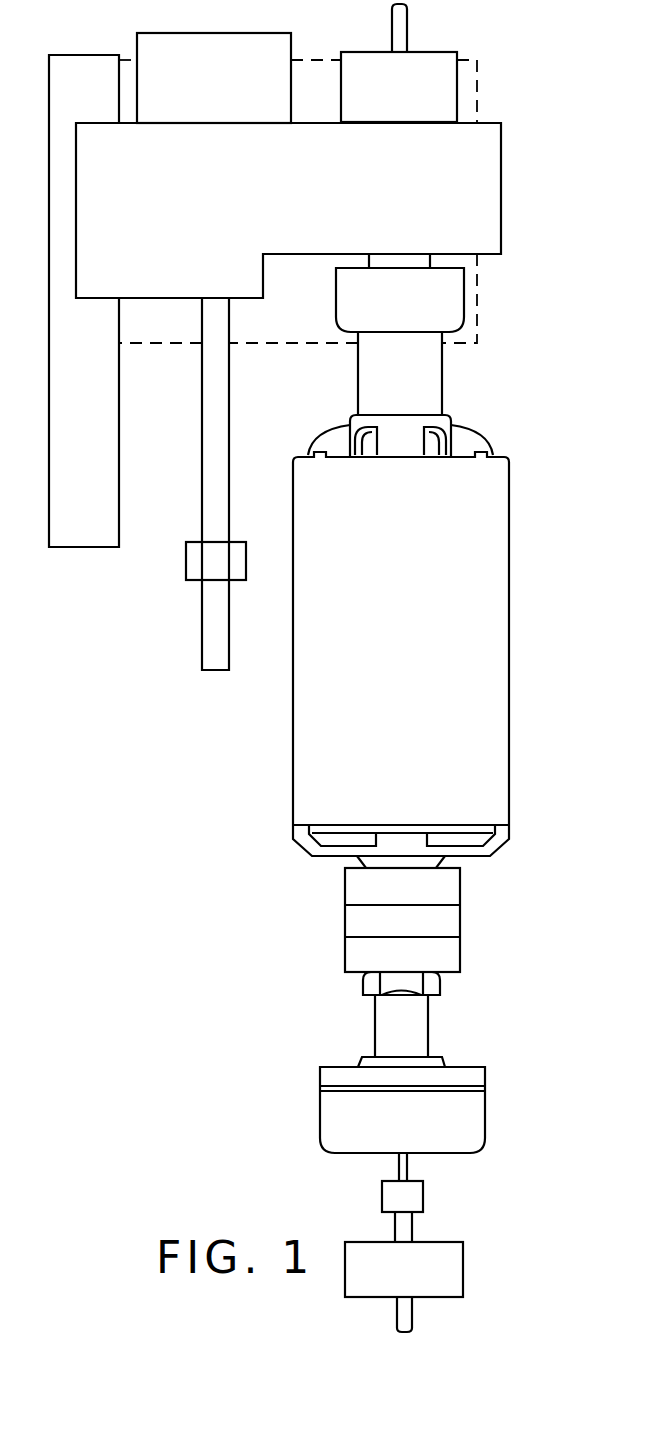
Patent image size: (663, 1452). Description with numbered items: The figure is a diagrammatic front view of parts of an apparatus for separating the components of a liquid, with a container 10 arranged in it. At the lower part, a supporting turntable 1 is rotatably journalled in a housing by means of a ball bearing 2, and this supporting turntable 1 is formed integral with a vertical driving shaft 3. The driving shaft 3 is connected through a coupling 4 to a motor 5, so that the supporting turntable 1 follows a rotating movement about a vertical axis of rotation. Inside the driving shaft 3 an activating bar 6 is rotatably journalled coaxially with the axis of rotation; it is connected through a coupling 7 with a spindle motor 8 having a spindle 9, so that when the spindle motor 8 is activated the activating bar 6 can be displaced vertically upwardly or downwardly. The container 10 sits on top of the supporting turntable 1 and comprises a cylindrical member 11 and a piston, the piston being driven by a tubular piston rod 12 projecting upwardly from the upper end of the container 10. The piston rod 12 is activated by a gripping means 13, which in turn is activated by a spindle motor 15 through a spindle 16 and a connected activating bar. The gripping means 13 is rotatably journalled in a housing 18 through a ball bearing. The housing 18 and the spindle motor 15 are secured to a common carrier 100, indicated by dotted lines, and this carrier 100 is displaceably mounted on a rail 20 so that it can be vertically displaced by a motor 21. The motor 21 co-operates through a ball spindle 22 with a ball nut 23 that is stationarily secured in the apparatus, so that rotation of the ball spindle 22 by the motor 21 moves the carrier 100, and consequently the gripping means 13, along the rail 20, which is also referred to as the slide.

The supporting turntable 1 is at (492, 852).
The ball bearing 2 is at (452, 951).
The vertical driving shaft 3 is at (427, 862).
The coupling 4 is at (423, 1025).
The motor 5 is at (474, 1108).
The activating bar 6 is at (407, 1162).
The coupling 7 is at (416, 1197).
The spindle motor 8 is at (453, 1273).
The spindle 9 is at (410, 1226).
The container 10 is at (436, 620).
The cylindrical member 11 is at (500, 692).
The tubular piston rod 12 is at (434, 388).
The gripping means 13 is at (450, 302).
The spindle motor 15 is at (447, 83).
The spindle 16 is at (407, 18).
The housing 18 is at (490, 197).
The rail 20 is at (86, 532).
The motor 21 is at (222, 44).
The ball spindle 22 is at (216, 508).
The ball nut 23 is at (195, 562).
The carrier 100 is at (306, 55).